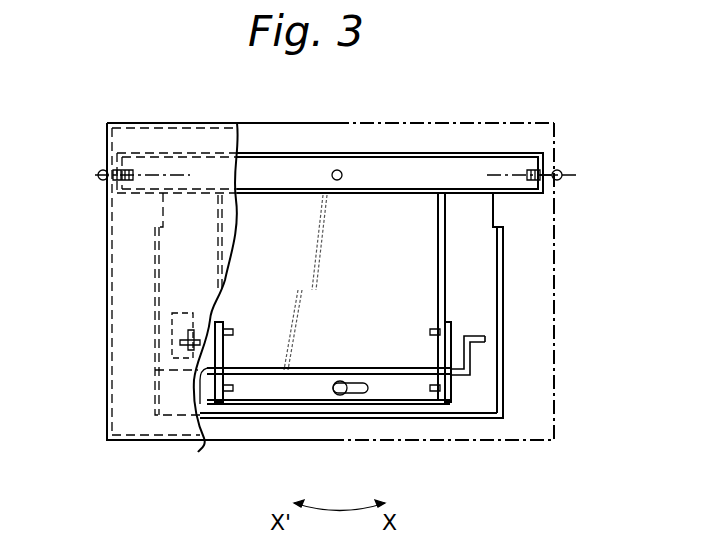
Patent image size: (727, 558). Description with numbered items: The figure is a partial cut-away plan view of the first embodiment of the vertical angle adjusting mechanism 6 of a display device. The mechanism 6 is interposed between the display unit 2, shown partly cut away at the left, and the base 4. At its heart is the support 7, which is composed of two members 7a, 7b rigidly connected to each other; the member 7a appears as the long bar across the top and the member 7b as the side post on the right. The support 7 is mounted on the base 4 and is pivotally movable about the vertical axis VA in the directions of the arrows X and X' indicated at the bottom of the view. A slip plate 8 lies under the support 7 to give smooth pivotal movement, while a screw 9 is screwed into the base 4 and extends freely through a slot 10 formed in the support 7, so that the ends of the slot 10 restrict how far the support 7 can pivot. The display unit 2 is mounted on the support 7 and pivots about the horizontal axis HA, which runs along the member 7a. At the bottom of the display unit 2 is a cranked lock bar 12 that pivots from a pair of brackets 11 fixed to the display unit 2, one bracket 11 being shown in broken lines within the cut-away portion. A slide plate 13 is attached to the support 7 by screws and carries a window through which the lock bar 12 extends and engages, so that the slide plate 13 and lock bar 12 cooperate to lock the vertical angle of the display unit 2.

The display unit 2 is at (107, 350).
The base 4 is at (493, 418).
The vertical angle adjusting mechanism 6 is at (517, 366).
The support 7 is at (430, 245).
The support member 7a is at (480, 153).
The support member 7b is at (445, 292).
The slip plate 8 is at (470, 405).
The screw 9 is at (337, 395).
The slot 10 is at (360, 390).
The bracket 11 is at (187, 313).
The cranked lock bar 12 is at (257, 380).
The slide plate 13 is at (445, 322).
The vertical axis VA is at (341, 170).
The horizontal axis HA is at (578, 173).